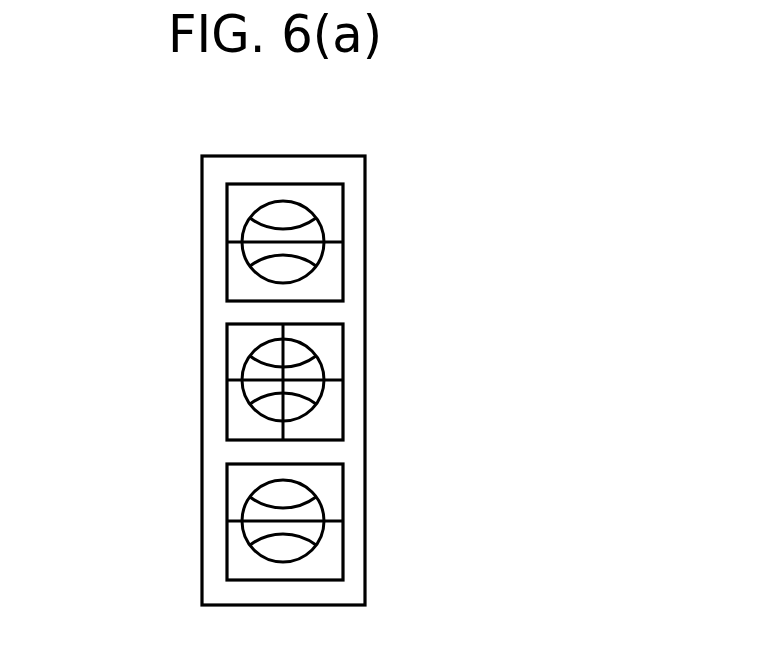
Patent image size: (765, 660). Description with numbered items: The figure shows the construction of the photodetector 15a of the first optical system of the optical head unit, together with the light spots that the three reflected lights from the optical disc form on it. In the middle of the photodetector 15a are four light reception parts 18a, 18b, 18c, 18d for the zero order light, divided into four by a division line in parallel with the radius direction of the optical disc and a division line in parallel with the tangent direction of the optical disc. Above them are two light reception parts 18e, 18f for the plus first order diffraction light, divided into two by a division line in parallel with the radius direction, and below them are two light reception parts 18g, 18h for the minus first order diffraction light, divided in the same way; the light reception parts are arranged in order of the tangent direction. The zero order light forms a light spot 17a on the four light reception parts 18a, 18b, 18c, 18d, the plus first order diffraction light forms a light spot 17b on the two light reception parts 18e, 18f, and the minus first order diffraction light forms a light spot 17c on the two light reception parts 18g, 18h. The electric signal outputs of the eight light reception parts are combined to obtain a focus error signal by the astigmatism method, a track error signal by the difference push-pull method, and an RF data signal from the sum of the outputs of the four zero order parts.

The photodetector 15a is at (387, 164).
The light spot 17a is at (343, 380).
The light spot 17b is at (343, 241).
The light spot 17c is at (343, 521).
The light reception part 18a is at (236, 350).
The light reception part 18b is at (331, 347).
The light reception part 18c is at (236, 411).
The light reception part 18d is at (331, 423).
The light reception part 18e is at (236, 211).
The light reception part 18f is at (236, 265).
The light reception part 18g is at (236, 484).
The light reception part 18h is at (236, 538).